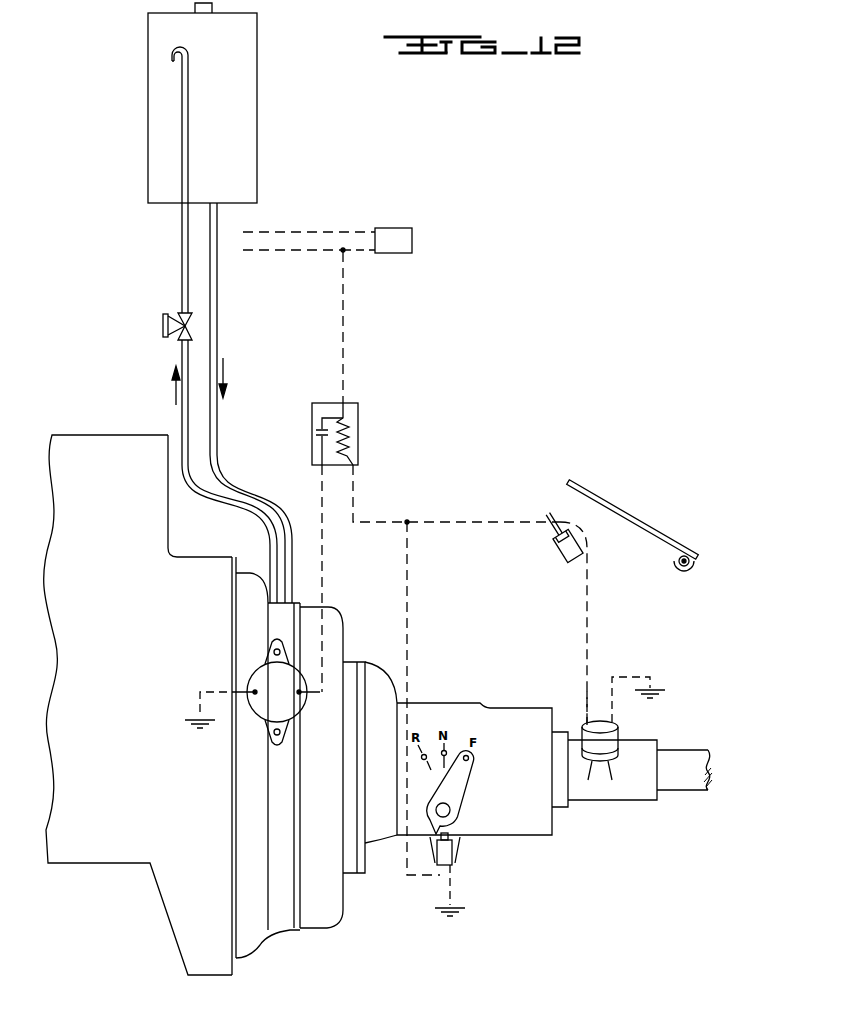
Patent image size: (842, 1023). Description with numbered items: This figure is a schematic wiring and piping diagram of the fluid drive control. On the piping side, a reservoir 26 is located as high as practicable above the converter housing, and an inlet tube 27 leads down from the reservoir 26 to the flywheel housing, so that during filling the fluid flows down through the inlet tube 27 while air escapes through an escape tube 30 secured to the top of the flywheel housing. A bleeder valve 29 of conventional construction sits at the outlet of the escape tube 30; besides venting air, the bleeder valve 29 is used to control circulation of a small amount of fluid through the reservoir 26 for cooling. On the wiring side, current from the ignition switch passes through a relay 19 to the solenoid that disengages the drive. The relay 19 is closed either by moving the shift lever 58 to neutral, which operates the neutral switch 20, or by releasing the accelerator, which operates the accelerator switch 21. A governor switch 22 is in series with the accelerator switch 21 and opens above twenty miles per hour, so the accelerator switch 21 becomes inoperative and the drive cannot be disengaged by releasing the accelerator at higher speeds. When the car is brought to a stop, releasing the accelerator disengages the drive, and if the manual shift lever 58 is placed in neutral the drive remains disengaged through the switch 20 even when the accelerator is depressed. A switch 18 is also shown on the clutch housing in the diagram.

The reservoir 26 is at (243, 69).
The escape tube 30 is at (182, 253).
The inlet tube 27 is at (218, 298).
The bleeder valve 29 is at (163, 324).
The relay 19 is at (358, 416).
The accelerator switch 21 is at (560, 553).
The clutch switch 18 is at (292, 700).
The shift lever 58 is at (458, 788).
The switch 20 is at (447, 852).
The governor switch 22 is at (612, 740).